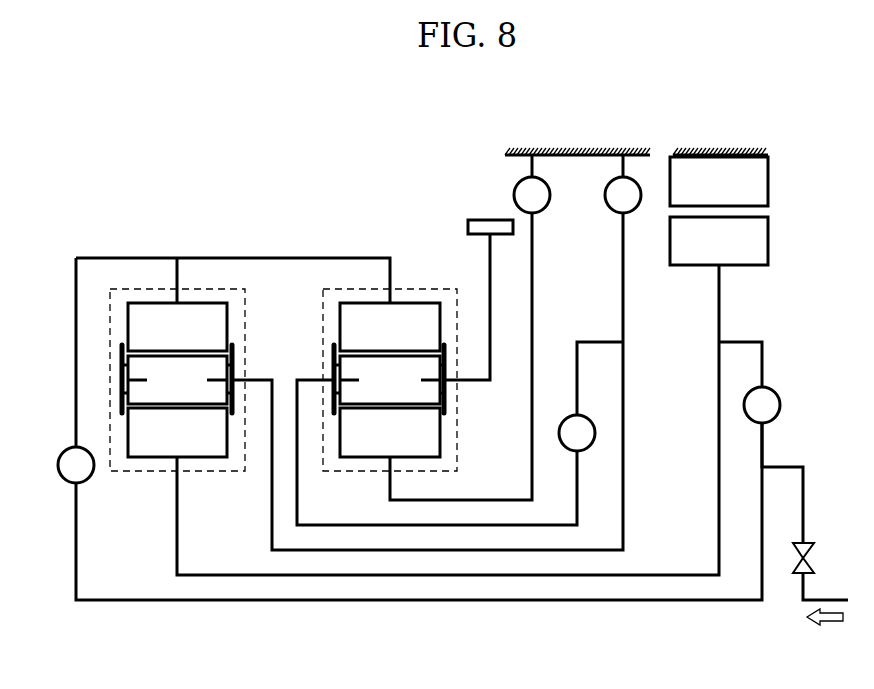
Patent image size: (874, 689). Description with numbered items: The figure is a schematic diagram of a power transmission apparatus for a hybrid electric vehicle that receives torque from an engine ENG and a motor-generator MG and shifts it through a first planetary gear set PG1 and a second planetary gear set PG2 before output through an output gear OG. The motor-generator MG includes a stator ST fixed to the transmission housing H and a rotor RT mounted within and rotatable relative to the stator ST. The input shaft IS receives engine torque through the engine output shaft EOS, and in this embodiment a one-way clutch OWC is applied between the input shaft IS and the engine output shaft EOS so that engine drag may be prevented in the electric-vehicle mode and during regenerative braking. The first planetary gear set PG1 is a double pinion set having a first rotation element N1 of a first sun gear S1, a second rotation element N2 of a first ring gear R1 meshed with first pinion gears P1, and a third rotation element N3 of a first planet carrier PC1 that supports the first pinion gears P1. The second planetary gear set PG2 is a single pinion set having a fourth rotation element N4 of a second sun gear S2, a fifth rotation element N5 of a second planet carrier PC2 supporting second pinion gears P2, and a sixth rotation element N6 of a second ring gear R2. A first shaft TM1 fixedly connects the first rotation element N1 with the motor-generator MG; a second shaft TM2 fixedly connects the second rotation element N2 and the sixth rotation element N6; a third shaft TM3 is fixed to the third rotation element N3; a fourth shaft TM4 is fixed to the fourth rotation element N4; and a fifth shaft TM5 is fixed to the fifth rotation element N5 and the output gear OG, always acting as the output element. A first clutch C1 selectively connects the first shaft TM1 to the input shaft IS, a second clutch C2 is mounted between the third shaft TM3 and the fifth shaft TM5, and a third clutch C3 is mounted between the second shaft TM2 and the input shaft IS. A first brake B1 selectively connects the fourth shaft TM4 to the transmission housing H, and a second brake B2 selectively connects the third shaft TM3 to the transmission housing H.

The first planetary gear set PG1 is at (137, 488).
The second planetary gear set PG2 is at (350, 488).
The first rotation element N1 is at (177, 432).
The first sun gear S1 is at (177, 432).
The second rotation element N2 is at (177, 327).
The first ring gear R1 is at (177, 327).
The third rotation element N3 is at (127, 379).
The first planet carrier PC1 is at (122, 365).
The fourth rotation element N4 is at (390, 432).
The second sun gear S2 is at (390, 432).
The fifth rotation element N5 is at (420, 393).
The second planet carrier PC2 is at (447, 397).
The sixth rotation element N6 is at (390, 327).
The second ring gear R2 is at (390, 327).
The first pinion gears P1 is at (177, 380).
The second pinion gears P2 is at (390, 380).
The first shaft TM1 is at (540, 577).
The second shaft TM2 is at (234, 258).
The third shaft TM3 is at (477, 552).
The fourth shaft TM4 is at (415, 502).
The fifth shaft TM5 is at (490, 262).
The input shaft IS is at (601, 602).
The output gear OG is at (490, 219).
The first brake B1 is at (532, 184).
The second brake B2 is at (623, 184).
The first clutch C1 is at (761, 442).
The second clutch C2 is at (460, 433).
The third clutch C3 is at (76, 465).
The motor-generator MG is at (741, 211).
The stator ST is at (719, 181).
The rotor RT is at (719, 241).
The transmission housing H is at (577, 153).
The one-way clutch OWC is at (814, 539).
The engine output shaft EOS is at (836, 598).
The engine ENG is at (825, 634).